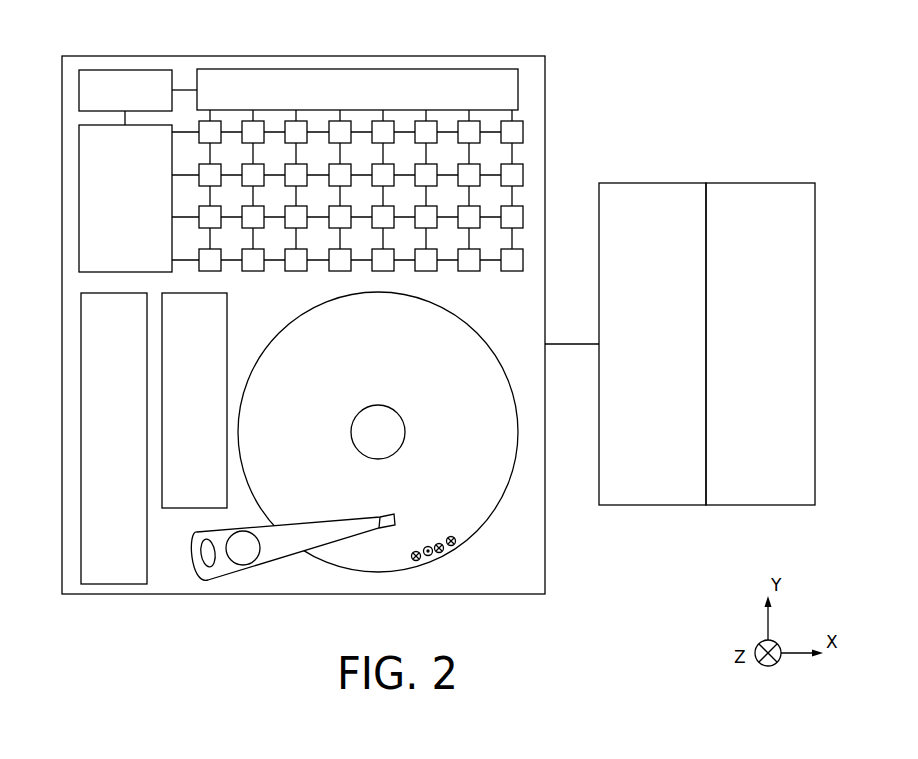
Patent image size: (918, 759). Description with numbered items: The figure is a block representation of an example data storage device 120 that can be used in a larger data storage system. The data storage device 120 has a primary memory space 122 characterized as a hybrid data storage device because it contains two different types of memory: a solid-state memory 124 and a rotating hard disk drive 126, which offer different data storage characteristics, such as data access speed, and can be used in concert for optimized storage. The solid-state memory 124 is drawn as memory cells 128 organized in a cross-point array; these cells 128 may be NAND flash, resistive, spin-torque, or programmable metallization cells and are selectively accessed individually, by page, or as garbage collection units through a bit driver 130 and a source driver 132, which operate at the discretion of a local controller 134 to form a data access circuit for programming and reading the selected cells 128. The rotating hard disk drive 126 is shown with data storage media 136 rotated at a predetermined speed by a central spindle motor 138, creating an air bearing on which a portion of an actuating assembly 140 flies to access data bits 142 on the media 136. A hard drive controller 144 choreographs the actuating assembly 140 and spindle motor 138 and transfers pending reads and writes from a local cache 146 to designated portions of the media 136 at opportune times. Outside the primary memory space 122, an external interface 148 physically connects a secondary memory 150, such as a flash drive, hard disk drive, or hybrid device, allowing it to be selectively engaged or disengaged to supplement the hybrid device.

The data storage device 120 is at (680, 53).
The primary memory space 122 is at (62, 63).
The solid-state memory 124 is at (383, 203).
The rotating hard disk drive 126 is at (395, 459).
The memory cell 128 is at (469, 271).
The bit driver 130 is at (144, 208).
The source driver 132 is at (377, 100).
The local controller 134 is at (144, 100).
The data storage media 136 is at (500, 371).
The spindle motor 138 is at (388, 420).
The actuating assembly 140 is at (288, 560).
The data bits 142 is at (449, 557).
The hard drive controller 144 is at (132, 455).
The local cache 146 is at (213, 412).
The external interface 148 is at (672, 356).
The secondary memory 150 is at (779, 356).